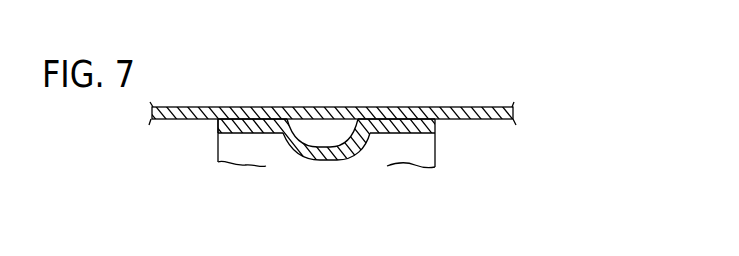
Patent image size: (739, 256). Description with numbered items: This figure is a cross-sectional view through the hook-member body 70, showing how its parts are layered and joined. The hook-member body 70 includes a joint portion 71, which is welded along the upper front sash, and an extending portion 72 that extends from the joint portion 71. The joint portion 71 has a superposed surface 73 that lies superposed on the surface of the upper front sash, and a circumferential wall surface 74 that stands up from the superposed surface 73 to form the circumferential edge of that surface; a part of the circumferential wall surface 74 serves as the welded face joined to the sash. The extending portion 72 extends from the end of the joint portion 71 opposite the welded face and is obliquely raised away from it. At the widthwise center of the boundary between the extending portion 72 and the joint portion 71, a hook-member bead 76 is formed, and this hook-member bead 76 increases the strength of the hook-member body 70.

The hook-member body 70 is at (422, 124).
The joint portion 71 is at (437, 122).
The extending portion 72 is at (428, 149).
The superposed surface 73 is at (240, 107).
The circumferential wall surface 74 is at (217, 126).
The hook-member bead 76 is at (322, 148).